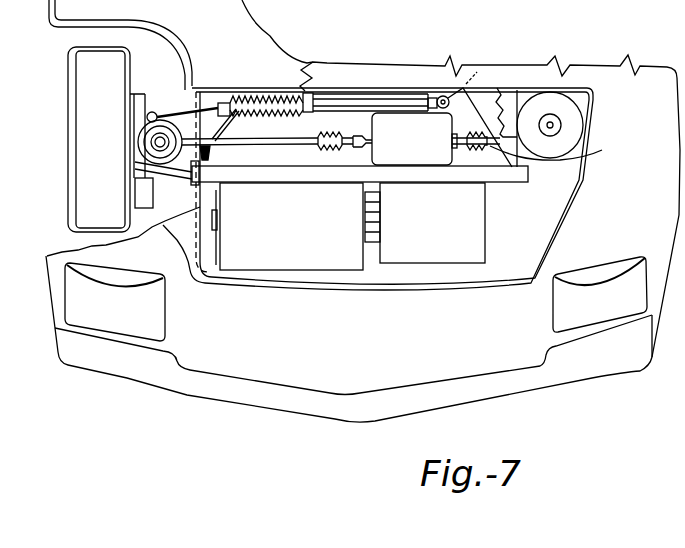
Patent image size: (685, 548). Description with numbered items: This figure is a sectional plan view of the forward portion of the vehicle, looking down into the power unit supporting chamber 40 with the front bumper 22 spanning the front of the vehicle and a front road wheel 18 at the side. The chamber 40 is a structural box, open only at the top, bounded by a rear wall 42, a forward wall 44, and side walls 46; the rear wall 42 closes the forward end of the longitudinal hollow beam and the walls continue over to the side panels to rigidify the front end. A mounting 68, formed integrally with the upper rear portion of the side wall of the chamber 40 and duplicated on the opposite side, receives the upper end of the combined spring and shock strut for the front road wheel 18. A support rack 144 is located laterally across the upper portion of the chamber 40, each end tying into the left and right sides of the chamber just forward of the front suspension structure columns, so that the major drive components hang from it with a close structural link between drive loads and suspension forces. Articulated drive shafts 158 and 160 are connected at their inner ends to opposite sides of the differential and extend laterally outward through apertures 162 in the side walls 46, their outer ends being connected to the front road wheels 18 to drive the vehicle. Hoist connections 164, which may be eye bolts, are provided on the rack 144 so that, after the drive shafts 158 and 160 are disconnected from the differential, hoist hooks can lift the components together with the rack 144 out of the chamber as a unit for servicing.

The front road wheel 18 is at (68, 98).
The front bumper 22 is at (178, 402).
The power unit supporting chamber 40 is at (502, 289).
The rear wall 42 is at (377, 88).
The forward wall 44 is at (393, 287).
The side walls 46 is at (508, 203).
The mounting 68 is at (571, 123).
The support rack 144 is at (466, 178).
The articulated drive shaft 158 is at (247, 136).
The articulated drive shaft 160 is at (405, 189).
The apertures 162 is at (212, 144).
The hoist connections 164 is at (291, 179).